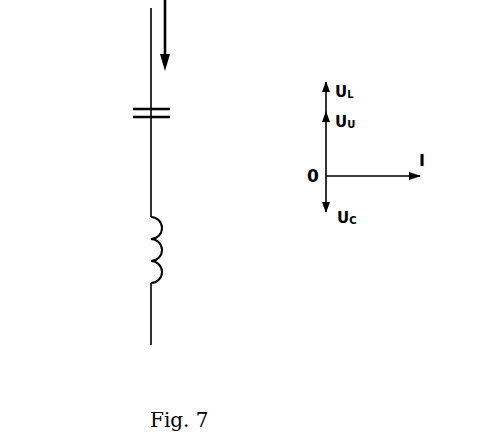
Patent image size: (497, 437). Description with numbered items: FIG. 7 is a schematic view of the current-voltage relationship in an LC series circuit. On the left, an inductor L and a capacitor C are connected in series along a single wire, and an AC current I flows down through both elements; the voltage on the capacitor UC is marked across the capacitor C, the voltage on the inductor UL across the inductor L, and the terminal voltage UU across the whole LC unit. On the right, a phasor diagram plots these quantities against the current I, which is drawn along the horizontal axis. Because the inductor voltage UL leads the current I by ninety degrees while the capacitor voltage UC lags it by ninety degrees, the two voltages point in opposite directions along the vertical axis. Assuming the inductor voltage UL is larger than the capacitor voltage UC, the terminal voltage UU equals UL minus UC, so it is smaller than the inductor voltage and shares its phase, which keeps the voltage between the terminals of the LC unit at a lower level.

The capacitor C is at (142, 118).
The inductor L is at (139, 250).
The AC current I is at (170, 35).
The voltage on the capacitor UC is at (193, 112).
The voltage on the inductor UL is at (193, 246).
The terminal voltage of the LC unit UU is at (86, 182).